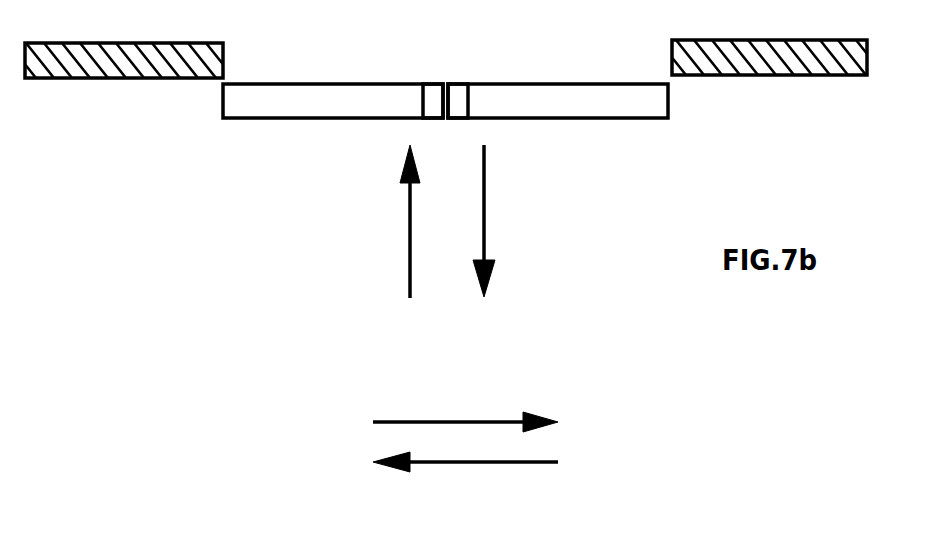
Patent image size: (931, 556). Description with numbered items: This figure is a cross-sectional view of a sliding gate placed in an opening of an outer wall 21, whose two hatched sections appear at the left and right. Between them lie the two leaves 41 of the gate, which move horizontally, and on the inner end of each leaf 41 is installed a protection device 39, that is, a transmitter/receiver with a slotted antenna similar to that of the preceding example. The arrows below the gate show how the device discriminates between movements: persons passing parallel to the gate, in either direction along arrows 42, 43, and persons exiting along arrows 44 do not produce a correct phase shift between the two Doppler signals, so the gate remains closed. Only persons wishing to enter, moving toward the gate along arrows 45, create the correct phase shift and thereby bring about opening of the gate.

The outer wall 21 is at (787, 58).
The protection device 39 is at (433, 90).
The leaves 41 is at (590, 108).
The arrows 42 is at (452, 422).
The arrows 43 is at (477, 462).
The arrows 44 is at (484, 218).
The arrows 45 is at (410, 227).